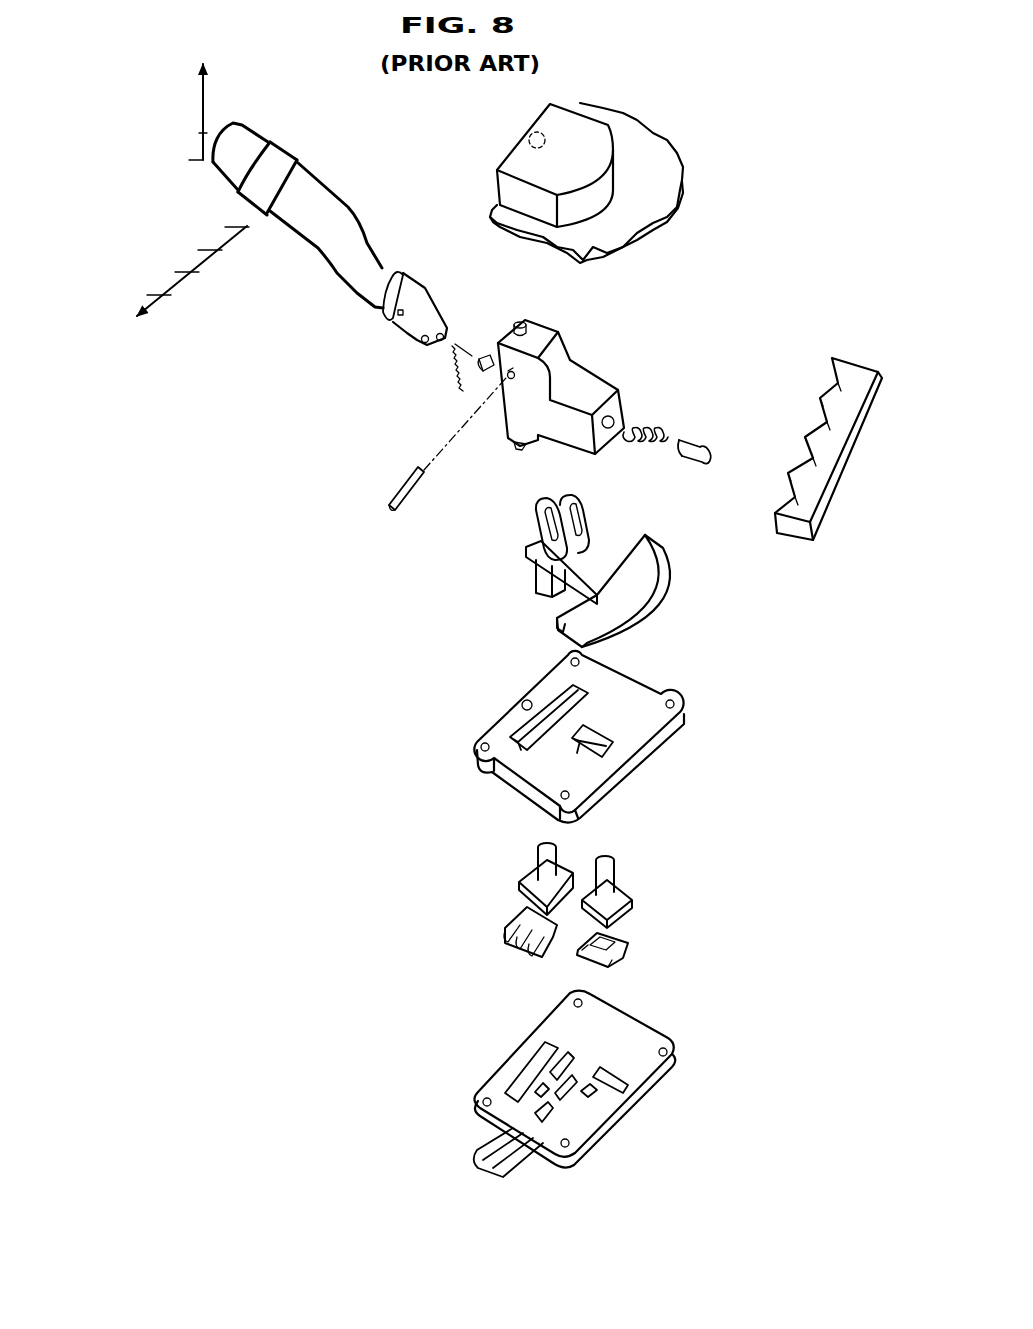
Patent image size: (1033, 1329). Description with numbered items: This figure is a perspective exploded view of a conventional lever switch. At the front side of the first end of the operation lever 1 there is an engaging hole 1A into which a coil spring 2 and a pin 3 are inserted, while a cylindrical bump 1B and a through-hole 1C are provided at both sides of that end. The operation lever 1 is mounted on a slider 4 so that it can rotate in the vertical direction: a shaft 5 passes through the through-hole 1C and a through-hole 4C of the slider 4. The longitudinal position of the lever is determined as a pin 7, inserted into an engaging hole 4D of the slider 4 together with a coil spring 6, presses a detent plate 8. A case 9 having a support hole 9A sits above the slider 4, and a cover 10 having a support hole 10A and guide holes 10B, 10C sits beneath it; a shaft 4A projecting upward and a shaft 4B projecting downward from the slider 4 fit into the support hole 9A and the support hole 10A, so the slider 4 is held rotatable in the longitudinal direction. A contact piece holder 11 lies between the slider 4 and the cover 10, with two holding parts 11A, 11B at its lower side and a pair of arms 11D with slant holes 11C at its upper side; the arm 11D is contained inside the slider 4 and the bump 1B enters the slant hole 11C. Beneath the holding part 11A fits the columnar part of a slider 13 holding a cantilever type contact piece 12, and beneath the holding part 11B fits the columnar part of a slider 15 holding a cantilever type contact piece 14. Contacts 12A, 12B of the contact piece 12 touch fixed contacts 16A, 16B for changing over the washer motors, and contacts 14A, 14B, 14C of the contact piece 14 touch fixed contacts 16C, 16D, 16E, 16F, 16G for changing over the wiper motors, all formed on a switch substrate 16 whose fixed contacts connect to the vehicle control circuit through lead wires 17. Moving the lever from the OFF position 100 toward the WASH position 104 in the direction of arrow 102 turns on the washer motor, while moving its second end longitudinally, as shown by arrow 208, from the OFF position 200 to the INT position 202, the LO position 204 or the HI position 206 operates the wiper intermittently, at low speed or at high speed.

The operation lever 1 is at (336, 157).
The engaging hole 1A is at (449, 329).
The cylindrical bump 1B is at (417, 345).
The through-hole 1C is at (391, 318).
The coil spring 2 is at (452, 354).
The pin 3 is at (478, 361).
The slider 4 is at (598, 341).
The shaft 4A is at (524, 321).
The shaft 4B is at (514, 447).
The through-hole 4C is at (506, 374).
The engaging hole 4D is at (620, 403).
The shaft 5 is at (403, 483).
The coil spring 6 is at (651, 432).
The pin 7 is at (695, 442).
The detent plate 8 is at (823, 353).
The case 9 is at (478, 177).
The support hole 9A is at (532, 133).
The cover 10 is at (702, 732).
The support hole 10A is at (522, 702).
The guide hole 10B is at (570, 738).
The guide hole 10C is at (525, 740).
The contact piece holder 11 is at (666, 585).
The holding part 11A is at (558, 623).
The holding part 11B is at (547, 583).
The slant hole 11C is at (540, 520).
The arm 11D is at (553, 548).
The contact piece 12 is at (643, 953).
The contact 12A is at (620, 942).
The contact 12B is at (600, 934).
The slider 13 is at (617, 895).
The contact piece 14 is at (500, 918).
The contact 14A is at (528, 960).
The contact 14B is at (515, 952).
The contact 14C is at (502, 938).
The slider 15 is at (533, 873).
The switch substrate 16 is at (723, 1095).
The fixed contact 16A is at (597, 1092).
The fixed contact 16B is at (628, 1083).
The fixed contact 16C is at (553, 1115).
The fixed contact 16D is at (533, 1090).
The fixed contact 16E is at (587, 1082).
The fixed contact 16F is at (570, 1054).
The fixed contact 16G is at (525, 1075).
The lead wire 17 is at (480, 1147).
The OFF position 100 is at (151, 165).
The arrow 102 is at (203, 133).
The WASH position 104 is at (146, 105).
The OFF position 200 is at (190, 225).
The INT position 202 is at (164, 245).
The LO position 204 is at (138, 269).
The HI position 206 is at (111, 292).
The arrow 208 is at (207, 258).